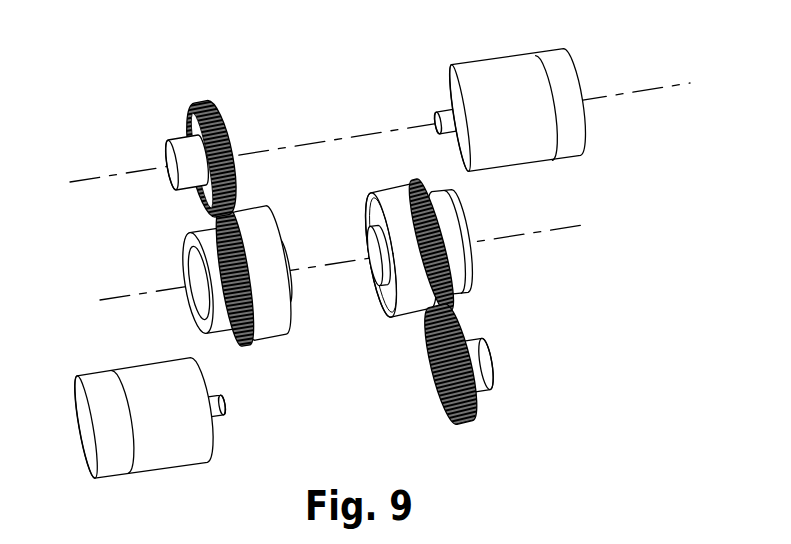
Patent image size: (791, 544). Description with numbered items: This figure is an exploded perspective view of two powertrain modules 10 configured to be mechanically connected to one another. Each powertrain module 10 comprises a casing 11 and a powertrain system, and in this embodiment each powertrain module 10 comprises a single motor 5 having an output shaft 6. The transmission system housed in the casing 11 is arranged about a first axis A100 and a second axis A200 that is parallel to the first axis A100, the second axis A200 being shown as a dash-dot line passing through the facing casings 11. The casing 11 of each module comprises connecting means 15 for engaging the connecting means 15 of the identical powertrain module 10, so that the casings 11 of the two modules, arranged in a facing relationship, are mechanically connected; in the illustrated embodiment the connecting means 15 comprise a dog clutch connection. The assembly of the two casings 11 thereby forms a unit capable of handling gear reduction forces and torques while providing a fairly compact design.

The motor 5 is at (492, 82).
The output shaft 6 is at (443, 112).
The powertrain module 10 is at (193, 92).
The casing 11 is at (478, 366).
The connecting means 15 is at (278, 229).
The first axis A100 is at (102, 180).
The second axis A200 is at (130, 295).